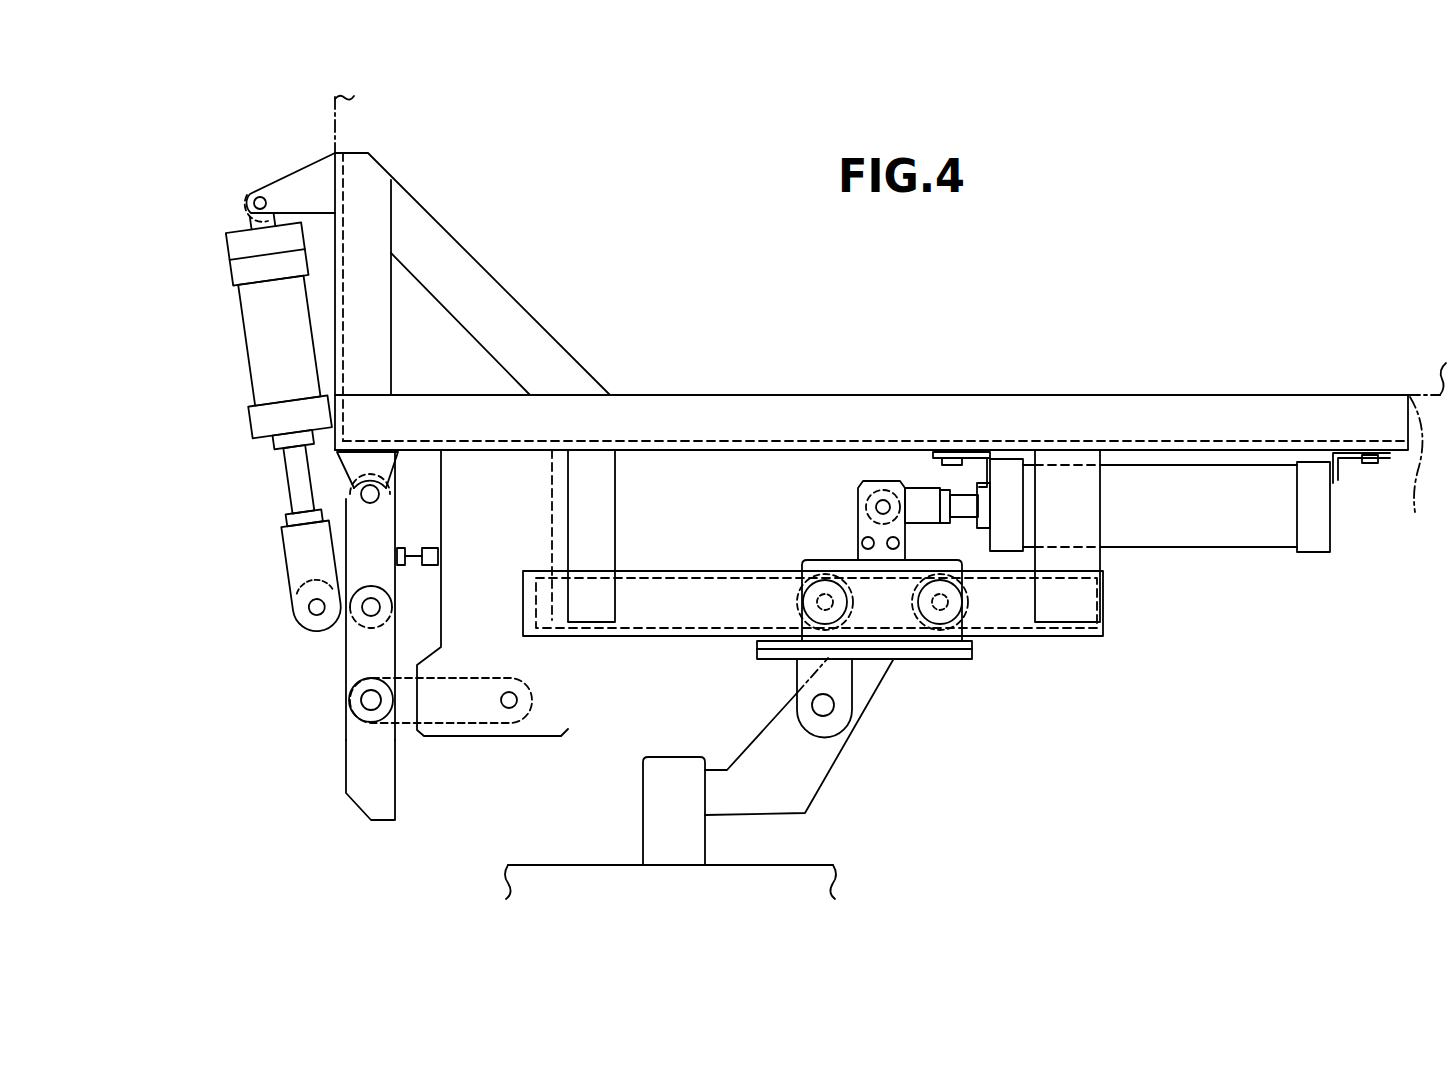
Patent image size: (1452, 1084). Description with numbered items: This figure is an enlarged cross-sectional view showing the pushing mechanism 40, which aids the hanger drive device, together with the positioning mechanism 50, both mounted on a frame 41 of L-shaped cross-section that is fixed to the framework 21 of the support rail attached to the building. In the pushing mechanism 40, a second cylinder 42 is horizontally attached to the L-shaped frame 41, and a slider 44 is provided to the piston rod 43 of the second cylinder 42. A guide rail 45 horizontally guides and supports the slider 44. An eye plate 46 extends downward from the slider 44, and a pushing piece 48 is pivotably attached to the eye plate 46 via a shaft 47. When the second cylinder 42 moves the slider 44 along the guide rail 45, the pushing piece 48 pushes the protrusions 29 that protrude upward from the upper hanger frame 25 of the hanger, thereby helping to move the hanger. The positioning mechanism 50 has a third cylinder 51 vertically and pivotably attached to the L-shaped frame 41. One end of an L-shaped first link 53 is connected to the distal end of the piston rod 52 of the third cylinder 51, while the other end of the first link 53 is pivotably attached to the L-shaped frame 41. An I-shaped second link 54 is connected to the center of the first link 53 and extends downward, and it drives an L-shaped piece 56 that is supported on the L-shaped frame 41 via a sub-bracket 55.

The framework 21 is at (890, 323).
The upper hanger frame 25 is at (566, 864).
The protrusions 29 is at (652, 812).
The pushing mechanism 40 is at (871, 509).
The frame 41 is at (1000, 417).
The second cylinder 42 is at (1203, 530).
The piston rod 43 is at (968, 500).
The slider 44 is at (840, 566).
The guide rail 45 is at (1012, 617).
The eye plate 46 is at (847, 682).
The shaft 47 is at (827, 708).
The pushing piece 48 is at (813, 783).
The positioning mechanism 50 is at (379, 507).
The third cylinder 51 is at (258, 355).
The piston rod 52 is at (280, 476).
The first link 53 is at (363, 556).
The second link 54 is at (363, 657).
The sub-bracket 55 is at (564, 678).
The L-shaped piece 56 is at (360, 752).